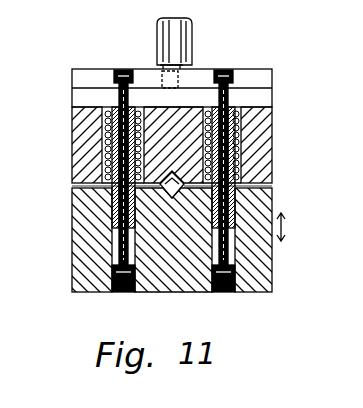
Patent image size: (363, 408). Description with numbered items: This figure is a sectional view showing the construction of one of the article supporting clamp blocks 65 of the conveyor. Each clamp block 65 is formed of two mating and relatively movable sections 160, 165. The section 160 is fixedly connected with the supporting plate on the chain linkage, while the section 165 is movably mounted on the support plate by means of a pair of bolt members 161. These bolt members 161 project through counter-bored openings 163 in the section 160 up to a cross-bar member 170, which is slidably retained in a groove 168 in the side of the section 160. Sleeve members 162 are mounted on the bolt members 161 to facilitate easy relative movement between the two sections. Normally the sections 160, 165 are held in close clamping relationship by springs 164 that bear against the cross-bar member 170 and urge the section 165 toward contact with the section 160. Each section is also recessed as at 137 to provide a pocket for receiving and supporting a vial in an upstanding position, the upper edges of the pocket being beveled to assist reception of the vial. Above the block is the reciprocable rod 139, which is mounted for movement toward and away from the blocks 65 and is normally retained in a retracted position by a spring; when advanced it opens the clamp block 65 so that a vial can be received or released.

The clamp block 65 is at (175, 168).
The recess 137 is at (178, 176).
The reciprocable rod 139 is at (193, 39).
The section 160 is at (82, 169).
The bolt member 161 is at (98, 267).
The sleeve member 162 is at (240, 190).
The counter-bored opening 163 is at (105, 115).
The spring 164 is at (238, 111).
The section 165 is at (80, 223).
The groove 168 is at (236, 118).
The cross-bar member 170 is at (273, 75).